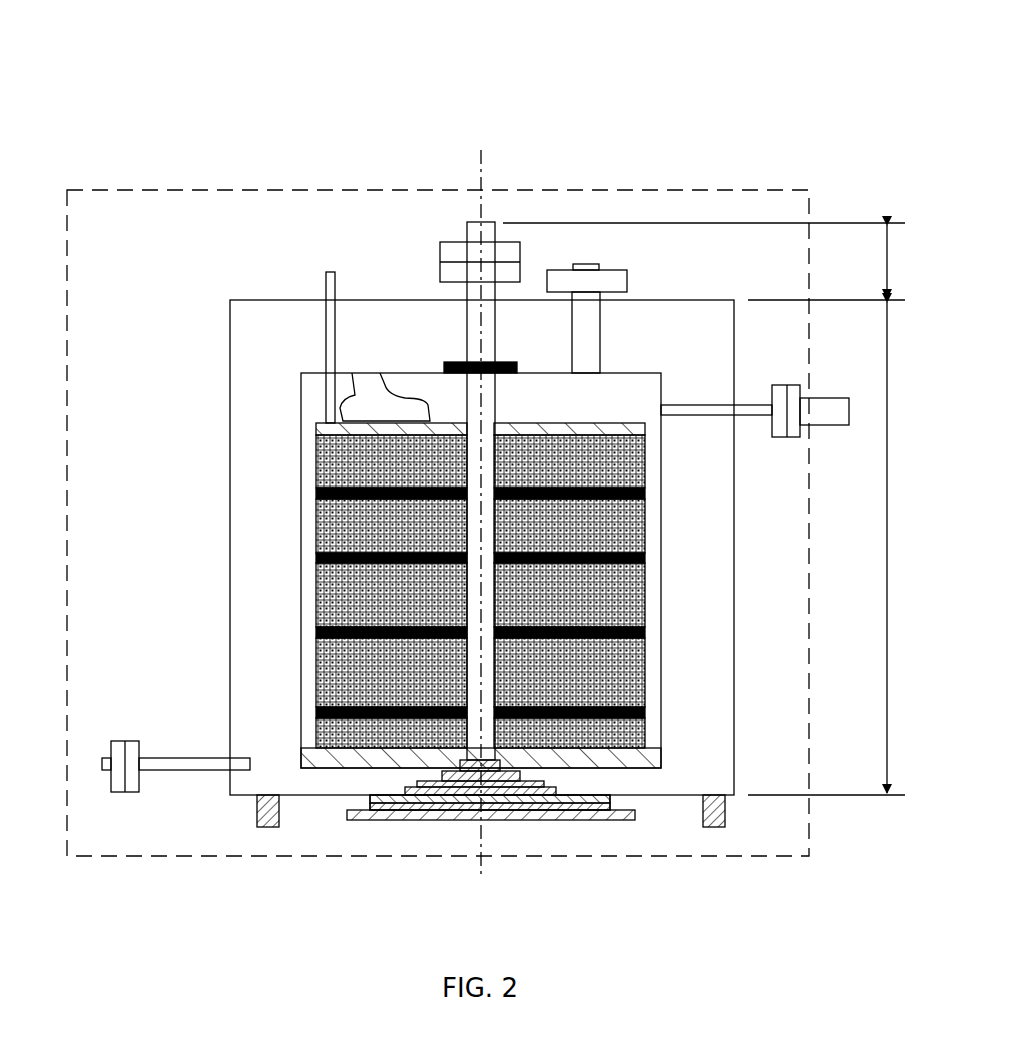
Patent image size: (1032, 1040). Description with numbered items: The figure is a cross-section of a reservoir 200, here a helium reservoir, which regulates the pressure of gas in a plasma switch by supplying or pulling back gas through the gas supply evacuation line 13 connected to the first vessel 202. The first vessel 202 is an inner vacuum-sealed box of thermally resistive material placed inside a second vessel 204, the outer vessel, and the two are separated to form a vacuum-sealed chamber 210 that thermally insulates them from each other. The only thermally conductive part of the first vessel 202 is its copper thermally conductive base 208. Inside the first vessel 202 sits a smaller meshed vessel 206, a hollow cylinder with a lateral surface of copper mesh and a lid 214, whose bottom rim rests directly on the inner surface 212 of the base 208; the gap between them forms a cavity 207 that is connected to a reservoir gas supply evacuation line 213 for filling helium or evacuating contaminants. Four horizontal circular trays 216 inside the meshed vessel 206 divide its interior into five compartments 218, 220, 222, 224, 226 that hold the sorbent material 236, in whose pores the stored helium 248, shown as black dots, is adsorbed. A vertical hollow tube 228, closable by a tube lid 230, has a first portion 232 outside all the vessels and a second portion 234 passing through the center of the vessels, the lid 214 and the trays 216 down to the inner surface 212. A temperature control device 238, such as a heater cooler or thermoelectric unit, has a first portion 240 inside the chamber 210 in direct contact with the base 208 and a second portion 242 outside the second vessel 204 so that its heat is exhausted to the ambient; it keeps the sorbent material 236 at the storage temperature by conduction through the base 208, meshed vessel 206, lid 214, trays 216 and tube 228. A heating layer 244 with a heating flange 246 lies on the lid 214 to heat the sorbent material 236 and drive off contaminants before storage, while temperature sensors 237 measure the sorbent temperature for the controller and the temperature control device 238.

The gas supply evacuation line 13 is at (825, 398).
The reservoir 200 is at (726, 70).
The first vessel 202 is at (662, 742).
The second vessel 204 is at (230, 338).
The meshed vessel 206 is at (647, 448).
The cavity 207 is at (541, 410).
The thermally conductive base 208 is at (305, 760).
The chamber 210 is at (248, 361).
The inner surface 212 is at (432, 760).
The reservoir gas supply evacuation line 213 is at (585, 264).
The lid 214 is at (318, 428).
The trays 216 is at (315, 495).
The compartment 218 is at (480, 461).
The compartment 220 is at (480, 526).
The compartment 222 is at (480, 595).
The compartment 224 is at (480, 672).
The compartment 226 is at (480, 733).
The vertical hollow tube 228 is at (490, 222).
The tube lid 230 is at (452, 242).
The first portion 232 is at (887, 252).
The second portion 234 is at (887, 560).
The sorbent material 236 is at (645, 717).
The temperature sensors 237 is at (392, 394).
The temperature control device 238 is at (636, 757).
The first portion 240 is at (518, 775).
The second portion 242 is at (548, 812).
The heating layer 244 is at (622, 420).
The heating flange 246 is at (331, 272).
The stored helium 248 is at (318, 478).